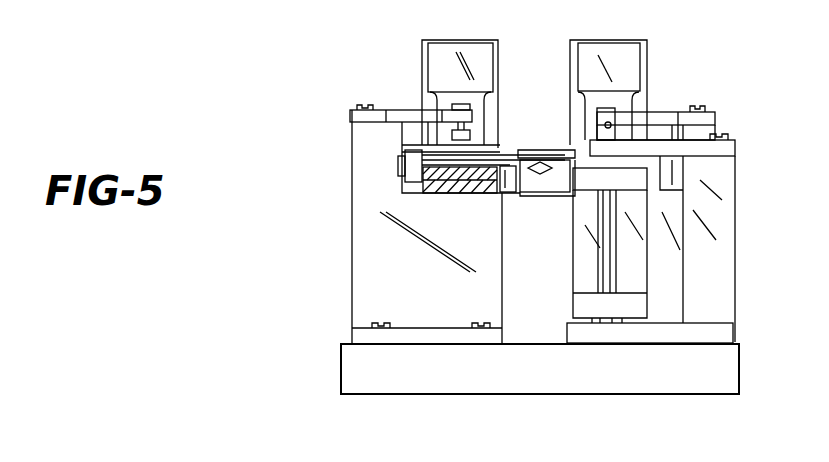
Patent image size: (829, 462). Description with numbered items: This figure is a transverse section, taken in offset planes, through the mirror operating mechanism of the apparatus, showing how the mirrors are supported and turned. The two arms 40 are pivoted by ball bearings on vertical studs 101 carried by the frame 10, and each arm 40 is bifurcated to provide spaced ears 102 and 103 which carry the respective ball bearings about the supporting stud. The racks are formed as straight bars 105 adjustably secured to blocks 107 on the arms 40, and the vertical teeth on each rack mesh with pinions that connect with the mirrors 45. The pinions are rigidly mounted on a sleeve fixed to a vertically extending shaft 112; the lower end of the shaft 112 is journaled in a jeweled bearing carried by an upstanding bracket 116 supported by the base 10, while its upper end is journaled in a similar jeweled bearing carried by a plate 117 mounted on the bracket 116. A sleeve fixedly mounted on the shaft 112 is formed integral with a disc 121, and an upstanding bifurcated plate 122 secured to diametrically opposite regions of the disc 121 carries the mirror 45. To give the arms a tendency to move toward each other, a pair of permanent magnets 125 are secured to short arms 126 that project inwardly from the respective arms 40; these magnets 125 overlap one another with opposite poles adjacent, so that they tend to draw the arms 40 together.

The frame 10 is at (540, 369).
The arms 40 is at (442, 191).
The mirrors 45 is at (457, 52).
The vertical studs 101 is at (600, 268).
The ear 102 is at (633, 192).
The ear 103 is at (618, 334).
The straight bars 105 is at (425, 183).
The blocks 107 is at (405, 162).
The vertically extending shaft 112 is at (470, 127).
The upstanding brackets 116 is at (737, 121).
The plates 117 is at (405, 112).
The discs 121 is at (435, 145).
The upstanding bifurcated plate 122 is at (422, 68).
The permanent magnets 125 is at (540, 152).
The short arms 126 is at (497, 186).